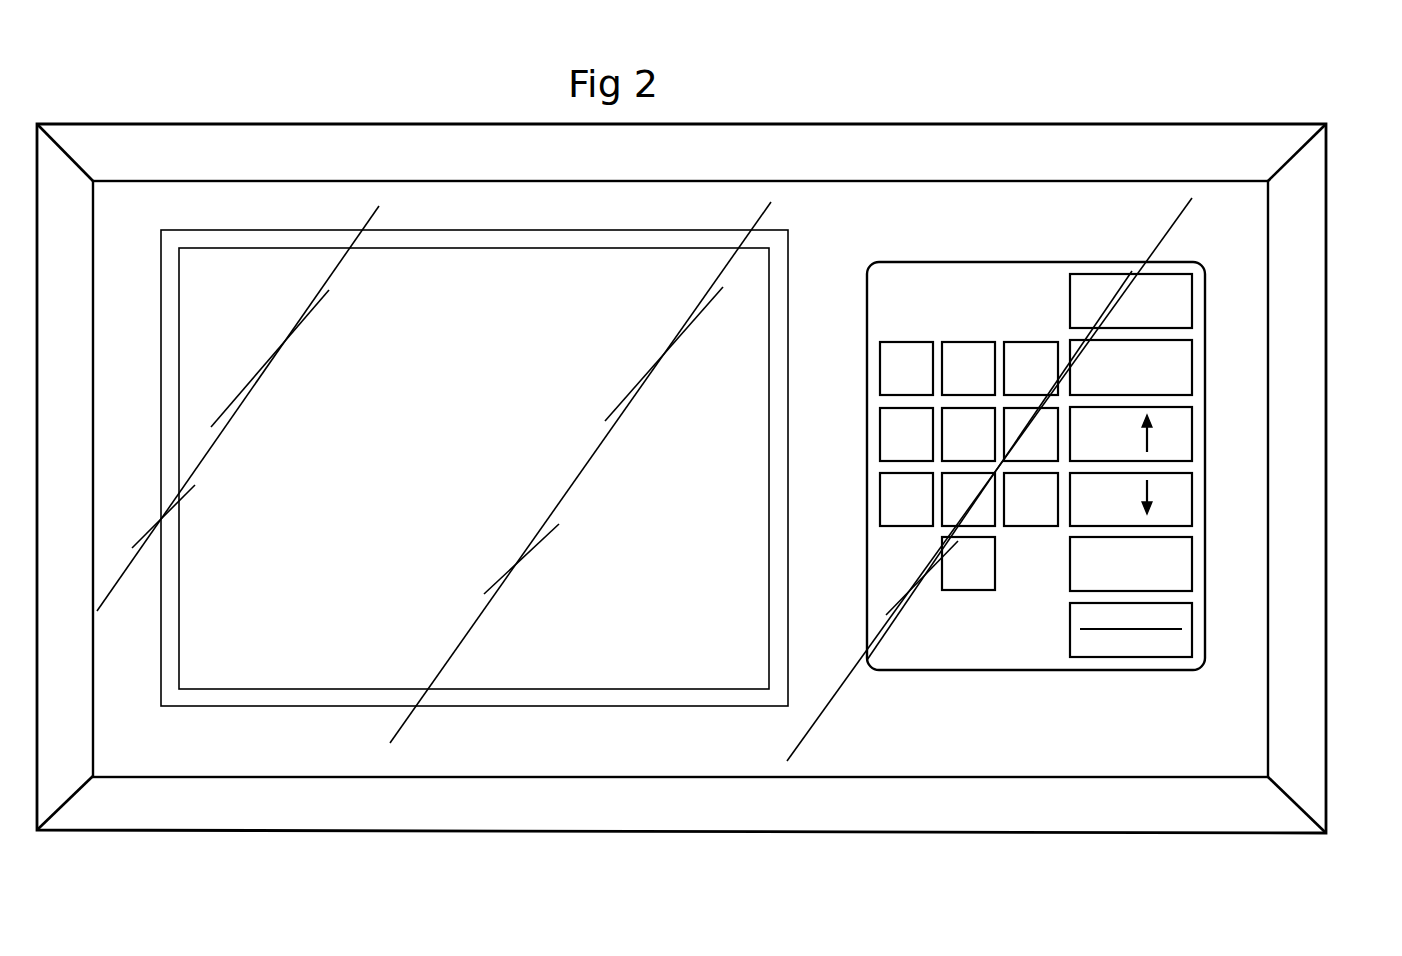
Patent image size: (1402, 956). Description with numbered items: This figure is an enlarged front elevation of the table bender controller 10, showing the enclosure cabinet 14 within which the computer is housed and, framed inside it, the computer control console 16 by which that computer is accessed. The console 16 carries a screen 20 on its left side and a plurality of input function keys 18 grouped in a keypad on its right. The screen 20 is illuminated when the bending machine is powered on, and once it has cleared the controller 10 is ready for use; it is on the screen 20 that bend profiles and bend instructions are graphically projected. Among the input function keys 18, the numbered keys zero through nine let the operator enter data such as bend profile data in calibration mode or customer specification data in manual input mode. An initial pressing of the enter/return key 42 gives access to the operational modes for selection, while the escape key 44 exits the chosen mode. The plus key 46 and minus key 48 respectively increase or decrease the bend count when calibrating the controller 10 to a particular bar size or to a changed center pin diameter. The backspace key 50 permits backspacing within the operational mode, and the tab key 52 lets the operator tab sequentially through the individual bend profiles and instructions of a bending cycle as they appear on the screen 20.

The table bender controller 10 is at (1226, 100).
The enclosure cabinet 14 is at (683, 122).
The computer control console 16 is at (1224, 243).
The input function keys 18 is at (974, 304).
The screen 20 is at (517, 356).
The enter/return key 42 is at (1183, 620).
The escape key 44 is at (1183, 572).
The plus key 46 is at (1183, 435).
The minus key 48 is at (1183, 497).
The backspace key 50 is at (1182, 378).
The tab key 52 is at (1180, 303).